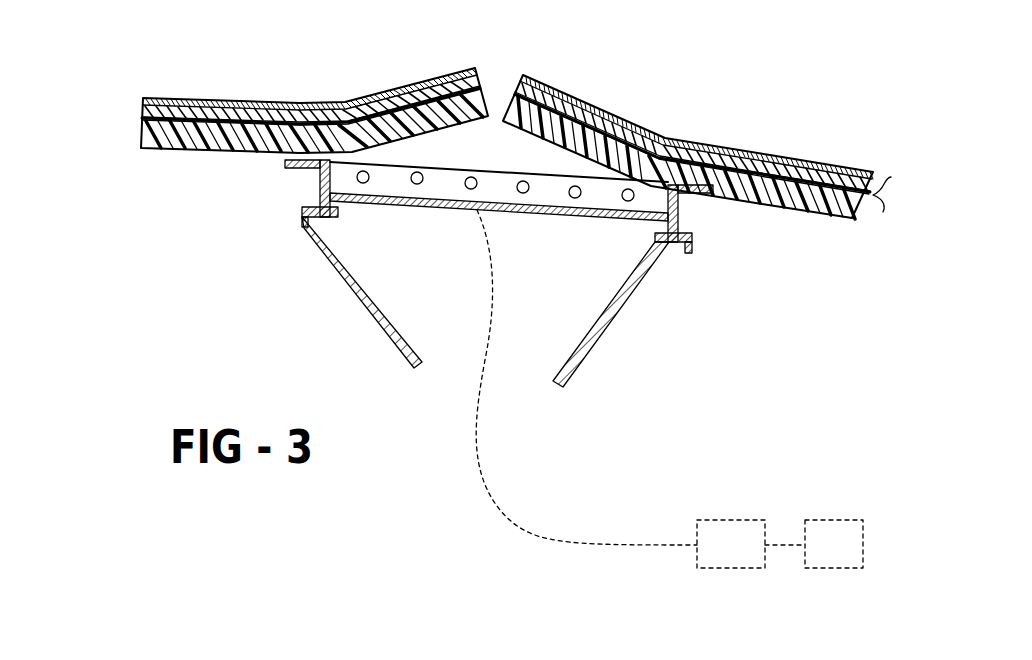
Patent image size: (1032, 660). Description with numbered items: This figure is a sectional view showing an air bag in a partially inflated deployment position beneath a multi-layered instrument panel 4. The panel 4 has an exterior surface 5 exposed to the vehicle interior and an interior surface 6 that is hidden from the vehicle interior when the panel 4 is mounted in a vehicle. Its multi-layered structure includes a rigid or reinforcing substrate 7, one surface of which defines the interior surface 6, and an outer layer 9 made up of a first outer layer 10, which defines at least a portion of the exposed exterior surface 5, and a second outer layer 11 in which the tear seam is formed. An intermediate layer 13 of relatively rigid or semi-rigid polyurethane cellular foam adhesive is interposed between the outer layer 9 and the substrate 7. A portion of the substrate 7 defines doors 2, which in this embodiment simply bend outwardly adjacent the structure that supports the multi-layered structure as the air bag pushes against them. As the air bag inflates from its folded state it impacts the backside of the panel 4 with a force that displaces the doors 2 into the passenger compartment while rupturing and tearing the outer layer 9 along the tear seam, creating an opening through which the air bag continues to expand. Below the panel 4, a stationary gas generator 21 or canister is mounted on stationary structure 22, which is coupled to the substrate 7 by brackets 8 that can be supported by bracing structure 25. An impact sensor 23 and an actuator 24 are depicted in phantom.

The doors 2 is at (412, 140).
The panel 4 is at (866, 222).
The exterior surface 5 is at (850, 160).
The interior surface 6 is at (797, 200).
The substrate 7 is at (170, 146).
The brackets 8 is at (315, 177).
The outer layer 9 is at (888, 197).
The first outer layer 10 is at (143, 99).
The second outer layer 11 is at (143, 108).
The intermediate layer 13 is at (143, 117).
The stationary gas generator 21 is at (557, 208).
The stationary structure 22 is at (437, 208).
The impact sensor 23 is at (837, 527).
The actuator 24 is at (730, 525).
The bracing structure 25 is at (343, 263).